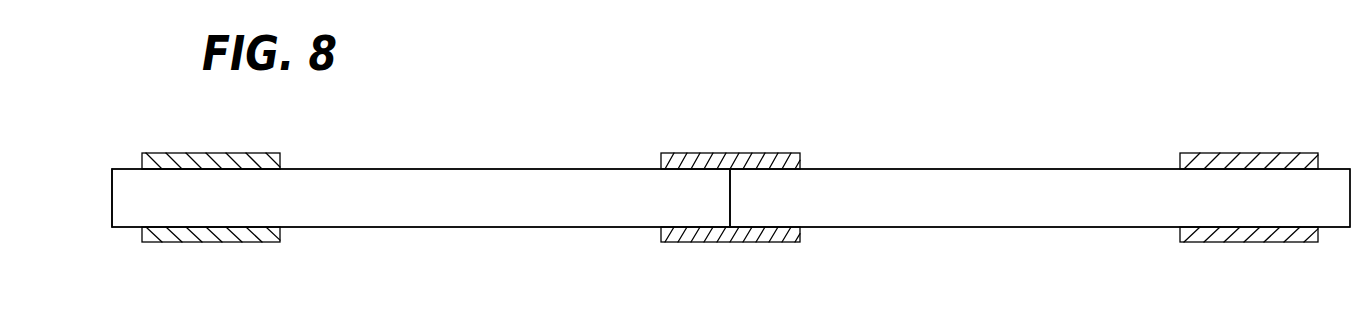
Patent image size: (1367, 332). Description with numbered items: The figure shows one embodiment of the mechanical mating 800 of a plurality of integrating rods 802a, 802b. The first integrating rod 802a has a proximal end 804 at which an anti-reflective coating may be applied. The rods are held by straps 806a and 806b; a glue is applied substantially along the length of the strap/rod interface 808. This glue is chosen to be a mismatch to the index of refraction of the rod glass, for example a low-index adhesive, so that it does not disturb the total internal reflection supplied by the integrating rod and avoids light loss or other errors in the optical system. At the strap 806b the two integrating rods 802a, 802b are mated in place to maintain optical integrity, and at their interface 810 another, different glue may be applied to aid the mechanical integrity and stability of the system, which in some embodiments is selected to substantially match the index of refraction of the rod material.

The mechanical mating 800 is at (812, 71).
The first integrating rod 802a is at (435, 227).
The second integrating rod 802b is at (918, 227).
The proximal end 804 is at (112, 203).
The first strap 806a is at (190, 153).
The second strap 806b is at (705, 243).
The strap/rod interface 808 is at (257, 171).
The interface between integrating rods 810 is at (731, 202).